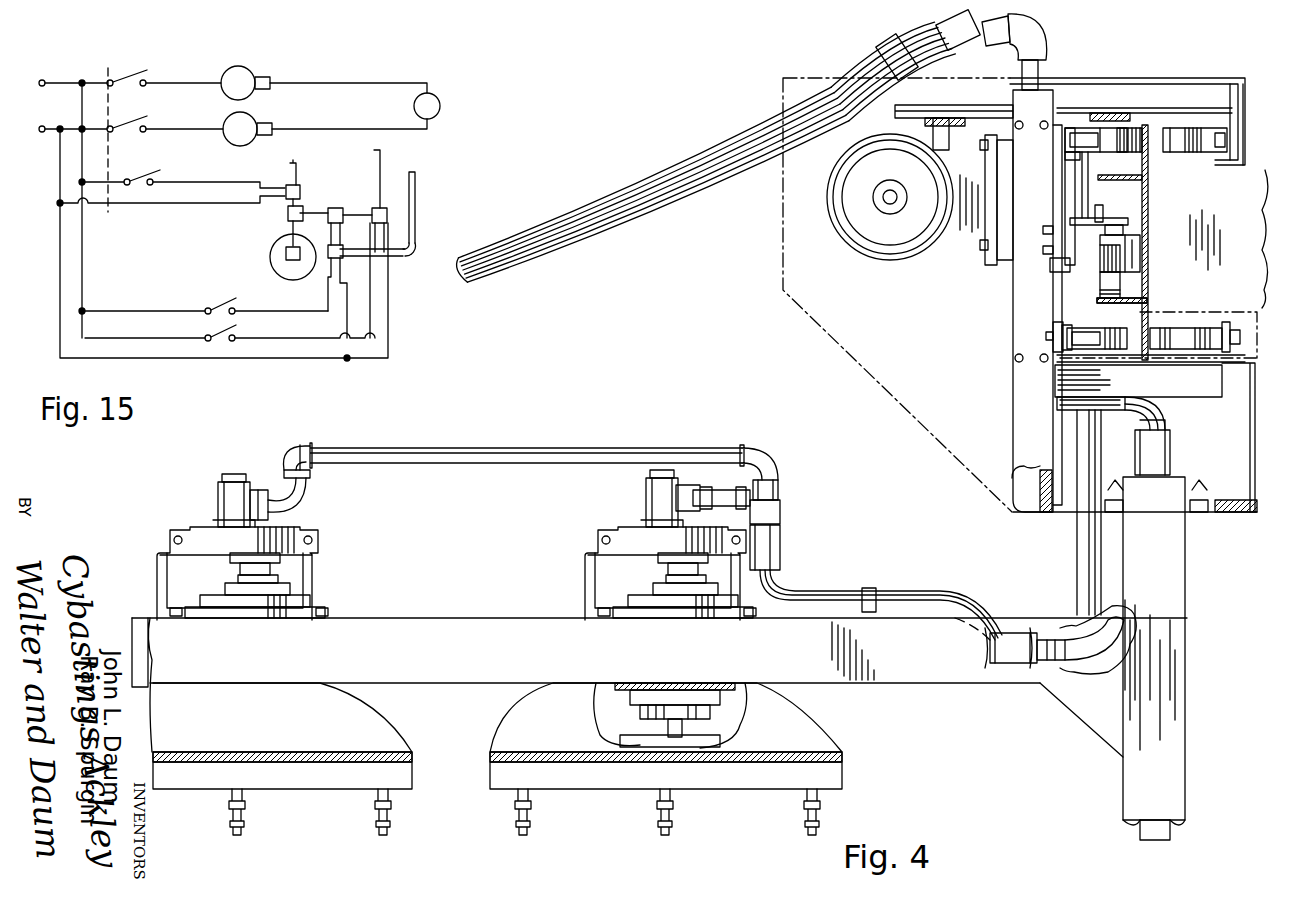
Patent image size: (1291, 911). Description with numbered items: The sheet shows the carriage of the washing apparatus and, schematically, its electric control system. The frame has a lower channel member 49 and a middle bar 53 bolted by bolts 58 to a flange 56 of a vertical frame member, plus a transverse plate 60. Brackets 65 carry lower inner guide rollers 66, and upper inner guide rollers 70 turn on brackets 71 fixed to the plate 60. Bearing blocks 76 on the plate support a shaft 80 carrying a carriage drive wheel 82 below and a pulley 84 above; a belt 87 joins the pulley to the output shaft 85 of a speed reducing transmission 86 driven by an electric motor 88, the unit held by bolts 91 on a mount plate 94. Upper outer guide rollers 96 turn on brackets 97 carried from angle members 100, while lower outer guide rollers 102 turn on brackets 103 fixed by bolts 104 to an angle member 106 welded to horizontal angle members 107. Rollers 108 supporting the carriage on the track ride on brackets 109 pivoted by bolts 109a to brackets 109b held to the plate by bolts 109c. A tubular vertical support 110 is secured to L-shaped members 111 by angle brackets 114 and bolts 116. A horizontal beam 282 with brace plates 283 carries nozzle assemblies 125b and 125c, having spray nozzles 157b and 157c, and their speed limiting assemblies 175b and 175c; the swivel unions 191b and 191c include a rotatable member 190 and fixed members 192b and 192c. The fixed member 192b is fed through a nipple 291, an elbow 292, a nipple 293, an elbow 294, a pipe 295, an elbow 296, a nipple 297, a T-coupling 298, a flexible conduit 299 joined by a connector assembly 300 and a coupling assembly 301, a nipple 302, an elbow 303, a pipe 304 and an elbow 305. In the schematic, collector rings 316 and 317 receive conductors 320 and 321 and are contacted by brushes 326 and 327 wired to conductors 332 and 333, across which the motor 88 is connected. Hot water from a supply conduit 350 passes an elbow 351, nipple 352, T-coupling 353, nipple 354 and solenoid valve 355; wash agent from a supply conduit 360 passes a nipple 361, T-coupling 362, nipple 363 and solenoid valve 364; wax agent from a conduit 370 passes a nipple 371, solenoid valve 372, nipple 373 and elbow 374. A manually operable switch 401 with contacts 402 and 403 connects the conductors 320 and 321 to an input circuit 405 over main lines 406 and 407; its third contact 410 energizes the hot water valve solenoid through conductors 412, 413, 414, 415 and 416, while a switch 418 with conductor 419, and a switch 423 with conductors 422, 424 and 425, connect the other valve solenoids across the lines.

In FIG. 4, the lower channel member 49 is at (1046, 514).
In FIG. 4, the middle bar 53 is at (1056, 328).
In FIG. 4, the flange 56 is at (1053, 288).
In FIG. 4, the bolts 58 is at (1048, 334).
In FIG. 4, the transverse plate 60 is at (1058, 168).
In FIG. 4, the brackets 65 is at (1078, 320).
In FIG. 4, the lower inner guide rollers 66 is at (1124, 326).
In FIG. 4, the upper inner guide rollers 70 is at (1132, 152).
In FIG. 4, the brackets 71 is at (1078, 128).
In FIG. 4, the bearing blocks 76 is at (1070, 156).
In FIG. 4, the shaft 80 is at (1080, 182).
In FIG. 4, the carriage drive wheel 82 is at (1140, 250).
In FIG. 4, the pulley 84 is at (1100, 112).
In FIG. 4, the output shaft 85 is at (940, 104).
In FIG. 4, the speed reducing transmission 86 is at (970, 240).
In FIG. 4, the belt 87 is at (994, 104).
In FIG. 15, the electric motor 88 is at (412, 104).
In FIG. 4, the electric motor 88 is at (895, 110).
In FIG. 4, the bolts 91 is at (1000, 264).
In FIG. 4, the mount plate 94 is at (1012, 248).
In FIG. 4, the upper outer guide rollers 96 is at (1170, 150).
In FIG. 4, the brackets 97 is at (1218, 165).
In FIG. 4, the angle members 100 is at (1232, 90).
In FIG. 4, the lower outer guide rollers 102 is at (1172, 326).
In FIG. 4, the brackets 103 is at (1240, 298).
In FIG. 4, the bolts 104 is at (1240, 336).
In FIG. 4, the angle member 106 is at (1240, 362).
In FIG. 4, the horizontal angle members 107 is at (1200, 392).
In FIG. 4, the rollers 108 is at (1122, 290).
In FIG. 4, the brackets 109 is at (1128, 234).
In FIG. 4, the bolts 109a is at (1120, 228).
In FIG. 4, the brackets 109b is at (1046, 226).
In FIG. 4, the bolts 109c is at (1046, 246).
In FIG. 4, the tubular vertical support 110 is at (1186, 560).
In FIG. 4, the L-shaped members 111 is at (1240, 514).
In FIG. 4, the angle brackets 114 is at (1128, 478).
In FIG. 4, the bolts 116 is at (1118, 514).
In FIG. 4, the nozzle assembly 125b is at (418, 731).
In FIG. 4, the nozzle assembly 125c is at (820, 731).
In FIG. 4, the spray nozzles 157b is at (378, 816).
In FIG. 4, the spray nozzles 157c is at (650, 818).
In FIG. 4, the speed limiting assembly 175b is at (326, 559).
In FIG. 4, the speed limiting assembly 175c is at (578, 556).
In FIG. 15, the rotatable member 190 is at (272, 276).
In FIG. 4, the swivel union 191b is at (206, 510).
In FIG. 4, the swivel union 191c is at (662, 502).
In FIG. 4, the fixed member 192b is at (210, 480).
In FIG. 4, the fixed member 192c is at (662, 474).
In FIG. 4, the horizontal beam 282 is at (478, 616).
In FIG. 4, the brace plates 283 is at (1074, 708).
In FIG. 4, the nipple 291 is at (262, 492).
In FIG. 4, the elbow 292 is at (296, 505).
In FIG. 4, the nipple 293 is at (308, 482).
In FIG. 4, the elbow 294 is at (292, 446).
In FIG. 4, the pipe 295 is at (416, 462).
In FIG. 4, the elbow 296 is at (770, 448).
In FIG. 4, the nipple 297 is at (782, 480).
In FIG. 4, the T-coupling 298 is at (780, 510).
In FIG. 4, the flexible conduit 299 is at (830, 596).
In FIG. 4, the connector assembly 300 is at (780, 546).
In FIG. 4, the coupling assembly 301 is at (1020, 668).
In FIG. 4, the nipple 302 is at (1060, 668).
In FIG. 4, the elbow 303 is at (1116, 640).
In FIG. 4, the pipe 304 is at (1078, 572).
In FIG. 4, the elbow 305 is at (1062, 407).
In FIG. 15, the collector ring 316 is at (237, 66).
In FIG. 15, the collector ring 317 is at (238, 140).
In FIG. 15, the conductor 320 is at (192, 80).
In FIG. 15, the conductor 321 is at (160, 124).
In FIG. 15, the brush 326 is at (264, 77).
In FIG. 15, the brush 327 is at (284, 110).
In FIG. 15, the conductor 332 is at (342, 80).
In FIG. 15, the conductor 333 is at (344, 128).
In FIG. 15, the supply conduit 350 is at (298, 170).
In FIG. 15, the elbow 351 is at (284, 257).
In FIG. 15, the nipple 352 is at (284, 250).
In FIG. 15, the T-coupling 353 is at (288, 222).
In FIG. 15, the nipple 354 is at (284, 208).
In FIG. 15, the solenoid valve 355 is at (300, 186).
In FIG. 15, the supply conduit 360 is at (372, 166).
In FIG. 15, the nipple 361 is at (308, 212).
In FIG. 15, the T-coupling 362 is at (356, 200).
In FIG. 15, the nipple 363 is at (356, 220).
In FIG. 15, the solenoid valve 364 is at (390, 210).
In FIG. 15, the line 370 is at (416, 168).
In FIG. 15, the nipple 371 is at (326, 244).
In FIG. 15, the solenoid valve 372 is at (344, 262).
In FIG. 15, the nipple 373 is at (392, 262).
In FIG. 15, the elbow 374 is at (416, 246).
In FIG. 15, the manually operable switch 401 is at (100, 72).
In FIG. 15, the contact 402 is at (126, 70).
In FIG. 15, the contact 403 is at (114, 124).
In FIG. 15, the input circuit 405 is at (54, 128).
In FIG. 15, the main line 406 is at (66, 80).
In FIG. 15, the main line 407 is at (90, 130).
In FIG. 15, the third contact 410 is at (148, 168).
In FIG. 15, the conductor 412 is at (84, 236).
In FIG. 15, the wire 413 is at (100, 182).
In FIG. 15, the conductor 414 is at (206, 178).
In FIG. 15, the conductor 415 is at (210, 208).
In FIG. 15, the conductor 416 is at (60, 230).
In FIG. 15, the manually operable switch 418 is at (224, 334).
In FIG. 15, the conductor 419 is at (296, 342).
In FIG. 15, the conductor 422 is at (118, 300).
In FIG. 15, the switch 423 is at (222, 306).
In FIG. 15, the conductor 424 is at (314, 312).
In FIG. 15, the conductor 425 is at (345, 318).